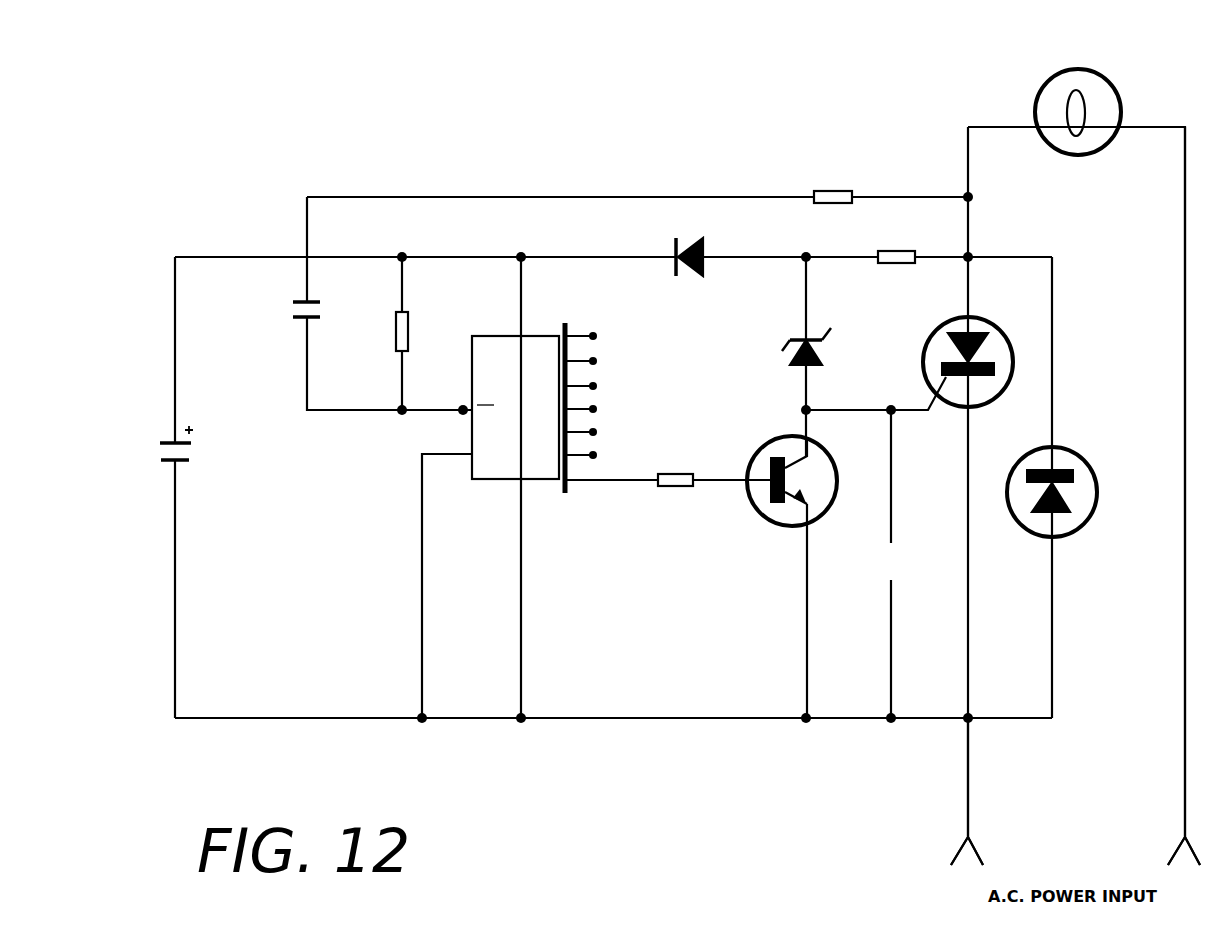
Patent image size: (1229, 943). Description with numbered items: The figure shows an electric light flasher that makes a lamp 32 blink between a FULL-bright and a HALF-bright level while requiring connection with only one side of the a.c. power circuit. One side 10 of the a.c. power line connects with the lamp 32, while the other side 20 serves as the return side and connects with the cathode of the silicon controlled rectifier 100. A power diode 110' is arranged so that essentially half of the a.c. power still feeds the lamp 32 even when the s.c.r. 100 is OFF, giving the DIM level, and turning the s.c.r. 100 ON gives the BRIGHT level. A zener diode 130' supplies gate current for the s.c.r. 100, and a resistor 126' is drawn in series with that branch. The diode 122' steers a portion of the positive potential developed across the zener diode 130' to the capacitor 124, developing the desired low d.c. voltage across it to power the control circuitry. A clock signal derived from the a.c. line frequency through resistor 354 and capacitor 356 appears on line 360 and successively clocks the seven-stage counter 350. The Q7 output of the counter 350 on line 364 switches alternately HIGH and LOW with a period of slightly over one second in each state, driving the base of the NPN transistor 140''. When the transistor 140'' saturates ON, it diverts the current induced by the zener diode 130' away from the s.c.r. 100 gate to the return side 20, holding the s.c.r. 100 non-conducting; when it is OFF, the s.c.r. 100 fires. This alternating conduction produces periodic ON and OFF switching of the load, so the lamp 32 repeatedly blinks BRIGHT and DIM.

The capacitor 124 is at (150, 448).
The capacitor 356 is at (280, 316).
The line 360 is at (418, 414).
The 7-stage counter 350 is at (478, 352).
The line 364 is at (646, 475).
The diode 122' is at (729, 241).
The resistor 354 is at (812, 188).
The resistor 126' is at (918, 236).
The zener diode 130' is at (780, 335).
The silicon controlled rectifier 100 is at (925, 346).
The NPN transistor 140'' is at (771, 513).
The power diode 110' is at (1084, 480).
The lamp 32 is at (1123, 93).
The other side of the a.c. power line 20 is at (969, 740).
The one side of the a.c. power line 10 is at (1187, 712).